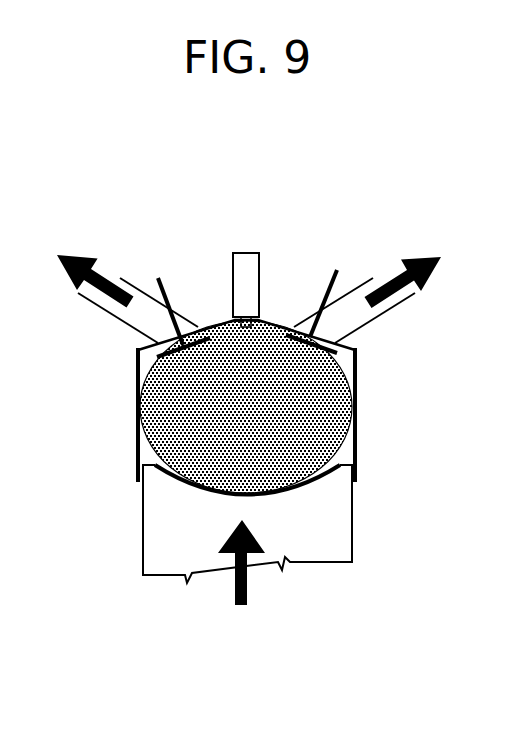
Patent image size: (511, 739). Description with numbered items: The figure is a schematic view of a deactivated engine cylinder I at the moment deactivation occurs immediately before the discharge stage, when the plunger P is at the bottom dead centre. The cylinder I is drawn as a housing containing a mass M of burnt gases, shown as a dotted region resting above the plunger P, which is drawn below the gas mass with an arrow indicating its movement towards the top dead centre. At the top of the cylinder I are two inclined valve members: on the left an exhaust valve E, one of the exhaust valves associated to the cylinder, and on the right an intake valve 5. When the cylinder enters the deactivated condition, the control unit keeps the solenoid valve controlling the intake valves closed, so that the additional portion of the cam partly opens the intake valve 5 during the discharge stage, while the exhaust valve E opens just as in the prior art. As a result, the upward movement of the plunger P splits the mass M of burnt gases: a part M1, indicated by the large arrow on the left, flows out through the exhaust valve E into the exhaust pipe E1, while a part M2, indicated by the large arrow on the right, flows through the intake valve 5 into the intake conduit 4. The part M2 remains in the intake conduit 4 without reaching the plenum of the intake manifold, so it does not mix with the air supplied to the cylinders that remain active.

The cylinder I is at (357, 363).
The mass of burnt gases M is at (327, 426).
The plunger P is at (340, 513).
The exhaust valve E is at (163, 288).
The intake valve 5 is at (325, 292).
The exhaust pipe E1 is at (133, 313).
The intake conduit 4 is at (358, 322).
The part of the mass of burnt gases flowing into the exhaust pipe M1 is at (103, 268).
The part of the mass of burnt gases flowing into the intake conduit M2 is at (398, 273).